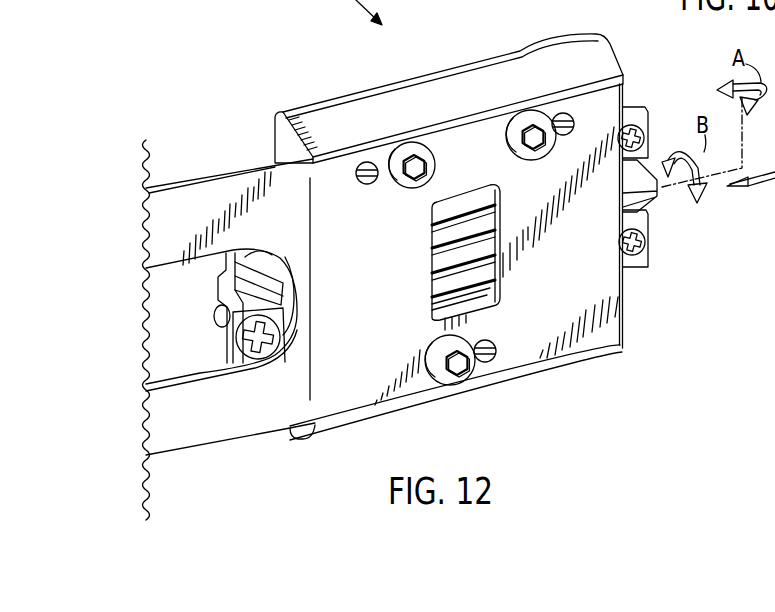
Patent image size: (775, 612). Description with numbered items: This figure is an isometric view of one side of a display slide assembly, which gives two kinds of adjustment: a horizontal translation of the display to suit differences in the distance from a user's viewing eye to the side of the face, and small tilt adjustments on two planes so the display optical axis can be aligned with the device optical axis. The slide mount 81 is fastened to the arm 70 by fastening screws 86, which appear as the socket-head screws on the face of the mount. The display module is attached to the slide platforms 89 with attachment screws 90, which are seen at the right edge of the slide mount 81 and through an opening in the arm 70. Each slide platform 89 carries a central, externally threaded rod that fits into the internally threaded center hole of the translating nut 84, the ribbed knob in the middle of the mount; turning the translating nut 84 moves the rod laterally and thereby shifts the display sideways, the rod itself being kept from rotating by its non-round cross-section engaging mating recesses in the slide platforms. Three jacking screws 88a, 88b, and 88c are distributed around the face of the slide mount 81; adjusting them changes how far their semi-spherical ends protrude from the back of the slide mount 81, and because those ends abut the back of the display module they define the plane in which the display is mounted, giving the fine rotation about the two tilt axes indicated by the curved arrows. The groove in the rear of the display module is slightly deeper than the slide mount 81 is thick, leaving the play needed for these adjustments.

The arm 70 is at (204, 430).
The slide mount 81 is at (572, 58).
The translating nut 84 is at (443, 232).
The fastening screws 86 is at (506, 137).
The jacking screw 88a is at (370, 160).
The jacking screw 88b is at (558, 116).
The jacking screw 88c is at (488, 363).
The slide platform 89 is at (657, 213).
The attachment screws 90 is at (645, 122).